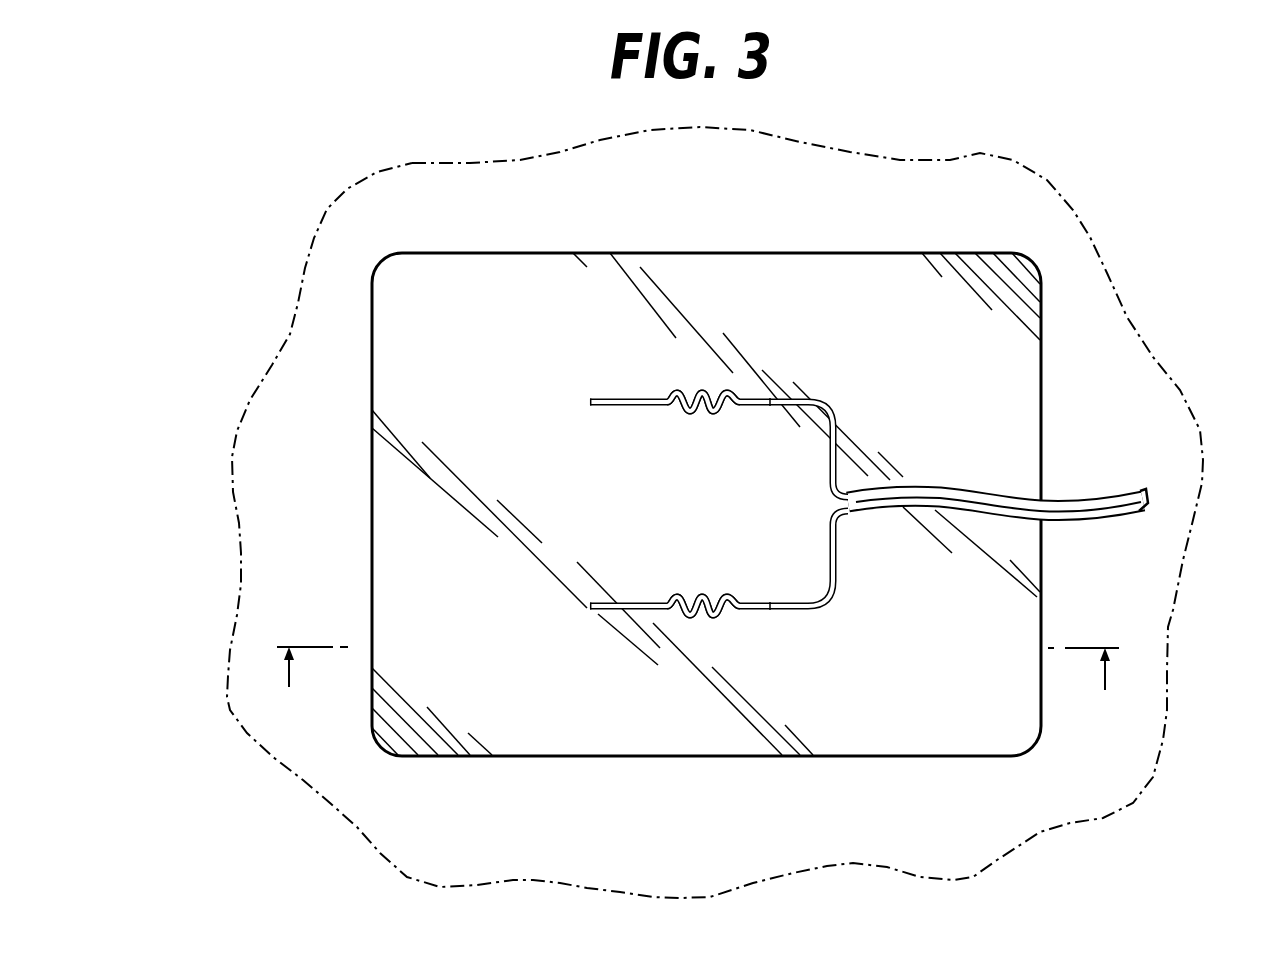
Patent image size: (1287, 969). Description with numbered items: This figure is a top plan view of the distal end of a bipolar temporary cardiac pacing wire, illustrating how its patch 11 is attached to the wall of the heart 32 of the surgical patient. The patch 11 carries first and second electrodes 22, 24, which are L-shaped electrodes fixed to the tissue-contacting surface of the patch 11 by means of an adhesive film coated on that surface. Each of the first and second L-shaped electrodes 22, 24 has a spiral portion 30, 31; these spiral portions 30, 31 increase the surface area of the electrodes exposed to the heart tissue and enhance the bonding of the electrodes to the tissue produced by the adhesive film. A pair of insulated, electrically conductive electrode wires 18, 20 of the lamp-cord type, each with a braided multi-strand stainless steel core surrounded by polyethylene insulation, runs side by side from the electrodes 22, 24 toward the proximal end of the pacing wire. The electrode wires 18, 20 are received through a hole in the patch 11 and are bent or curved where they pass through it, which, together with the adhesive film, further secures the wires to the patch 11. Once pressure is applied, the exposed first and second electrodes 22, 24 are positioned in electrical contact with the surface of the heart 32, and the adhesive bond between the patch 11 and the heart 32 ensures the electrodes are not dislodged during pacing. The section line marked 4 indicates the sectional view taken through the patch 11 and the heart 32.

The patch 11 is at (850, 270).
The heart 32 is at (1068, 220).
The first electrode 22 is at (714, 352).
The spiral portion 30 is at (701, 392).
The second electrode 24 is at (697, 658).
The spiral portion 31 is at (715, 612).
The electrode wire 18 is at (1118, 490).
The electrode wire 20 is at (1113, 520).
The section line 4- 4 is at (698, 684).